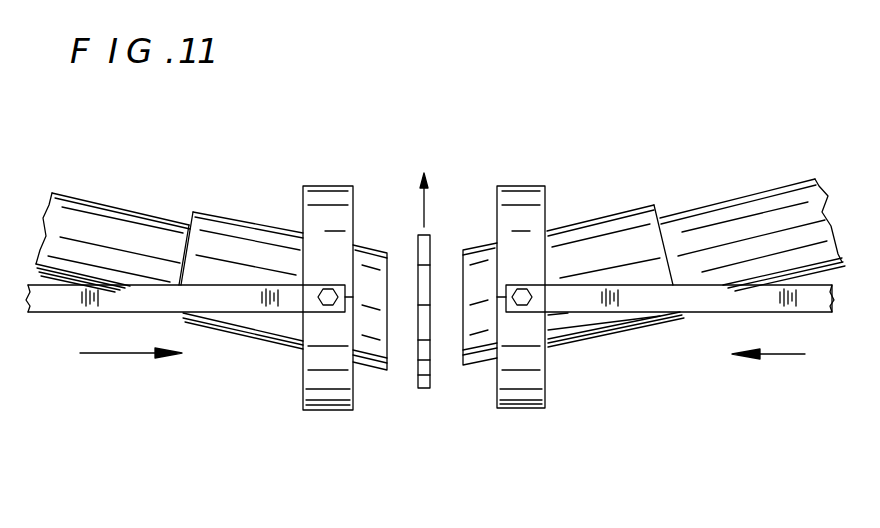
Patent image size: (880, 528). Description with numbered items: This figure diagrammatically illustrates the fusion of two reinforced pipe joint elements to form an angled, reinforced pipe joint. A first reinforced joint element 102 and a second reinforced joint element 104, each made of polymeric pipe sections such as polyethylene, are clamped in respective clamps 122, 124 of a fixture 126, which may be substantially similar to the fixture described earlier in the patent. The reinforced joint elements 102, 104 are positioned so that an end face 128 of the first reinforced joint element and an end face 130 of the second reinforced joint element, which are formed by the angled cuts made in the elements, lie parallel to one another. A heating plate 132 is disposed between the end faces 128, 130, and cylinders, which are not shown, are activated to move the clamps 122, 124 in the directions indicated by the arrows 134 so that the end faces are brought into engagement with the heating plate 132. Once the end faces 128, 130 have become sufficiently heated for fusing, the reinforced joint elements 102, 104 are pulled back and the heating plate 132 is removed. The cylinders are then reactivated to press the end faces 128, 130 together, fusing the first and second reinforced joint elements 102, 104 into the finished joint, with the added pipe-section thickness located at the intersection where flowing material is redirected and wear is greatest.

The first reinforced joint element 102 is at (242, 196).
The second reinforced joint element 104 is at (700, 182).
The clamp 122 is at (334, 193).
The clamp 124 is at (527, 192).
The fixture 126 is at (358, 438).
The end face 128 is at (390, 265).
The end face 130 is at (457, 270).
The heating plate 132 is at (423, 388).
The arrows 134 is at (115, 353).